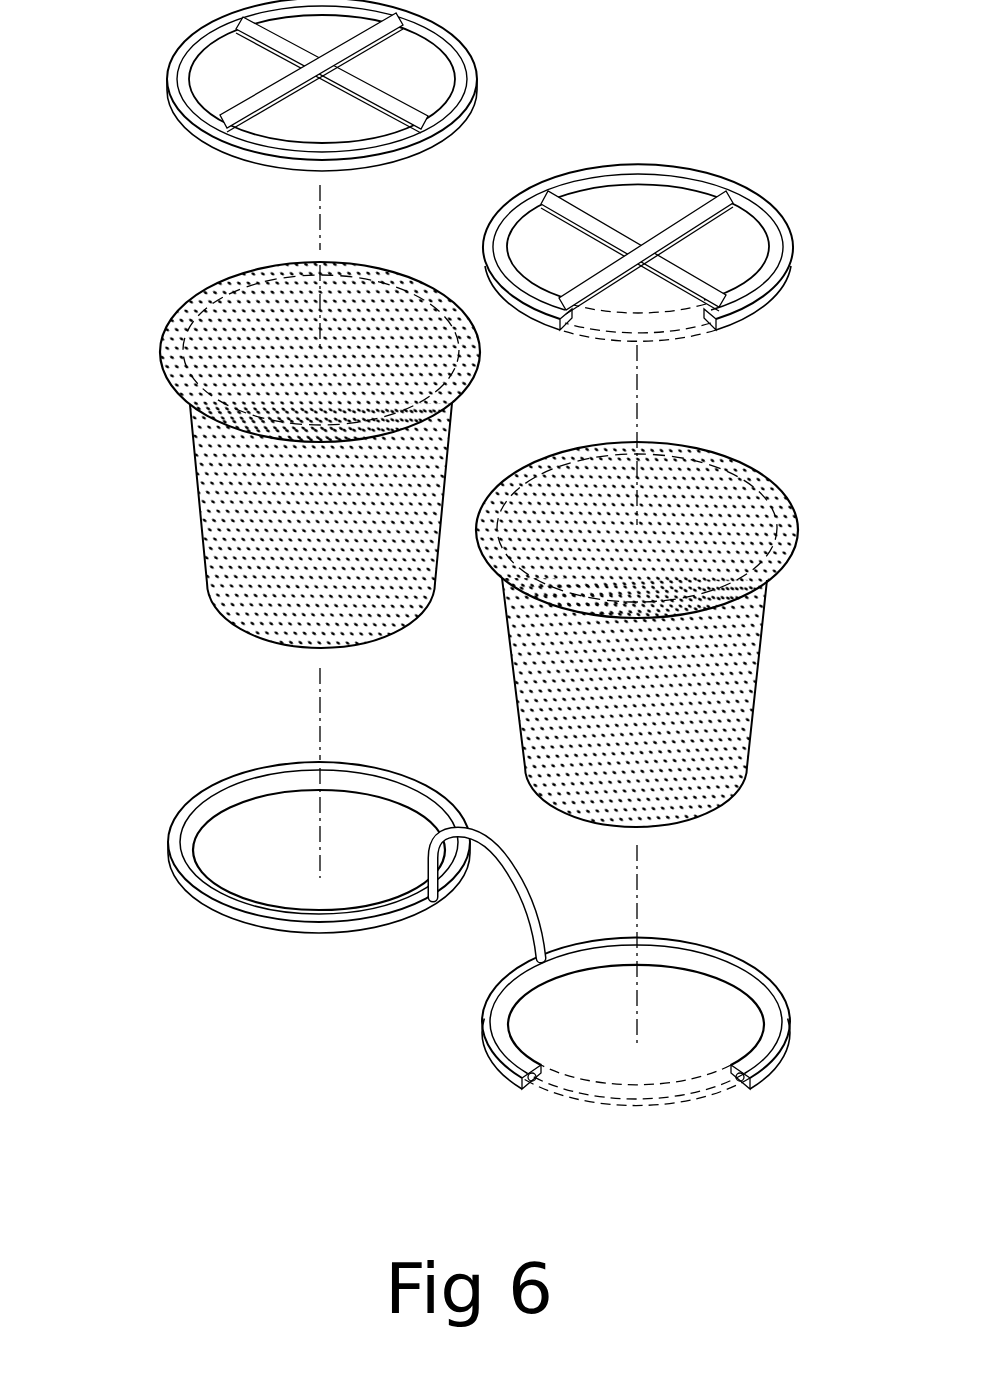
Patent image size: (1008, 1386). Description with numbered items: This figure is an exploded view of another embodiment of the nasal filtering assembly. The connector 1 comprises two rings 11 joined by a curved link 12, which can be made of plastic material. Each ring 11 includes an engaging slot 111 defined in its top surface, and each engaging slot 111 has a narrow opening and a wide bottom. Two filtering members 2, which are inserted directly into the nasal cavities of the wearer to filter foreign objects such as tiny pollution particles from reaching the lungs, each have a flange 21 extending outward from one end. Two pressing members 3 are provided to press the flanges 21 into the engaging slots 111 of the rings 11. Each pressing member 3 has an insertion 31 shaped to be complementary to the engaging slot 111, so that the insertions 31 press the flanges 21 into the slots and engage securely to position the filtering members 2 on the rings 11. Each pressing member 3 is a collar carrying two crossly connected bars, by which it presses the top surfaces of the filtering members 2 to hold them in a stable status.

The connector 1 is at (461, 956).
The ring 11 is at (479, 956).
The engaging slot 111 is at (522, 1062).
The link 12 is at (500, 890).
The filtering member 2 is at (481, 544).
The flange 21 is at (178, 366).
The pressing member 3 is at (480, 189).
The insertion 31 is at (253, 163).